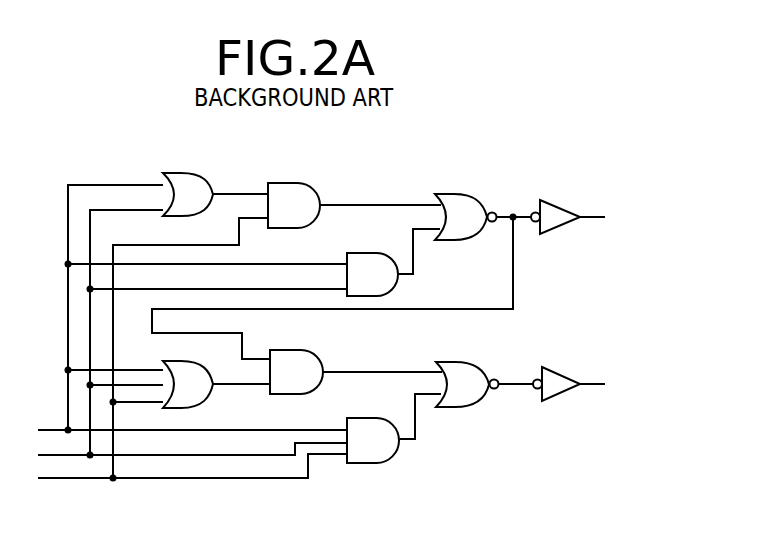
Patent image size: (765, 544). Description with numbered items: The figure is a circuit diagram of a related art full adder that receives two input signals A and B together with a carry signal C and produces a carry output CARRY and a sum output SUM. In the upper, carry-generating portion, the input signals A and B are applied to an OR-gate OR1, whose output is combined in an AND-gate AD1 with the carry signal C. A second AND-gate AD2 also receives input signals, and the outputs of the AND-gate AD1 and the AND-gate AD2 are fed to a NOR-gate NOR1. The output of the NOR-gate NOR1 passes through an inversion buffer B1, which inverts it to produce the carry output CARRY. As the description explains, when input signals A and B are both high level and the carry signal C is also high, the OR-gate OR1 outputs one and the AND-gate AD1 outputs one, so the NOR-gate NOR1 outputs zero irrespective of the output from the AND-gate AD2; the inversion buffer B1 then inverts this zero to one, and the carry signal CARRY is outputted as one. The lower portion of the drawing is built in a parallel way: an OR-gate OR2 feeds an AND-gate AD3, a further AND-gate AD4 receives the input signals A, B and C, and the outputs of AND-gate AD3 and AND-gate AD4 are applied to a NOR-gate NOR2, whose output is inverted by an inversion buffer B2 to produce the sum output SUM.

The OR-gate OR1 is at (186, 181).
The AND-gate AD1 is at (294, 193).
The AND-gate AD2 is at (370, 261).
The NOR-gate NOR1 is at (461, 205).
The inversion buffer B1 is at (555, 205).
The OR-gate OR2 is at (186, 373).
The AND-gate AD3 is at (296, 359).
The AND-gate AD4 is at (371, 427).
The NOR-gate NOR2 is at (462, 372).
The inversion buffer B2 is at (556, 372).
The input signal A is at (26, 432).
The input signal B is at (26, 457).
The carry signal C is at (26, 482).
The carry signal output CARRY is at (653, 218).
The sum output SUM is at (637, 385).